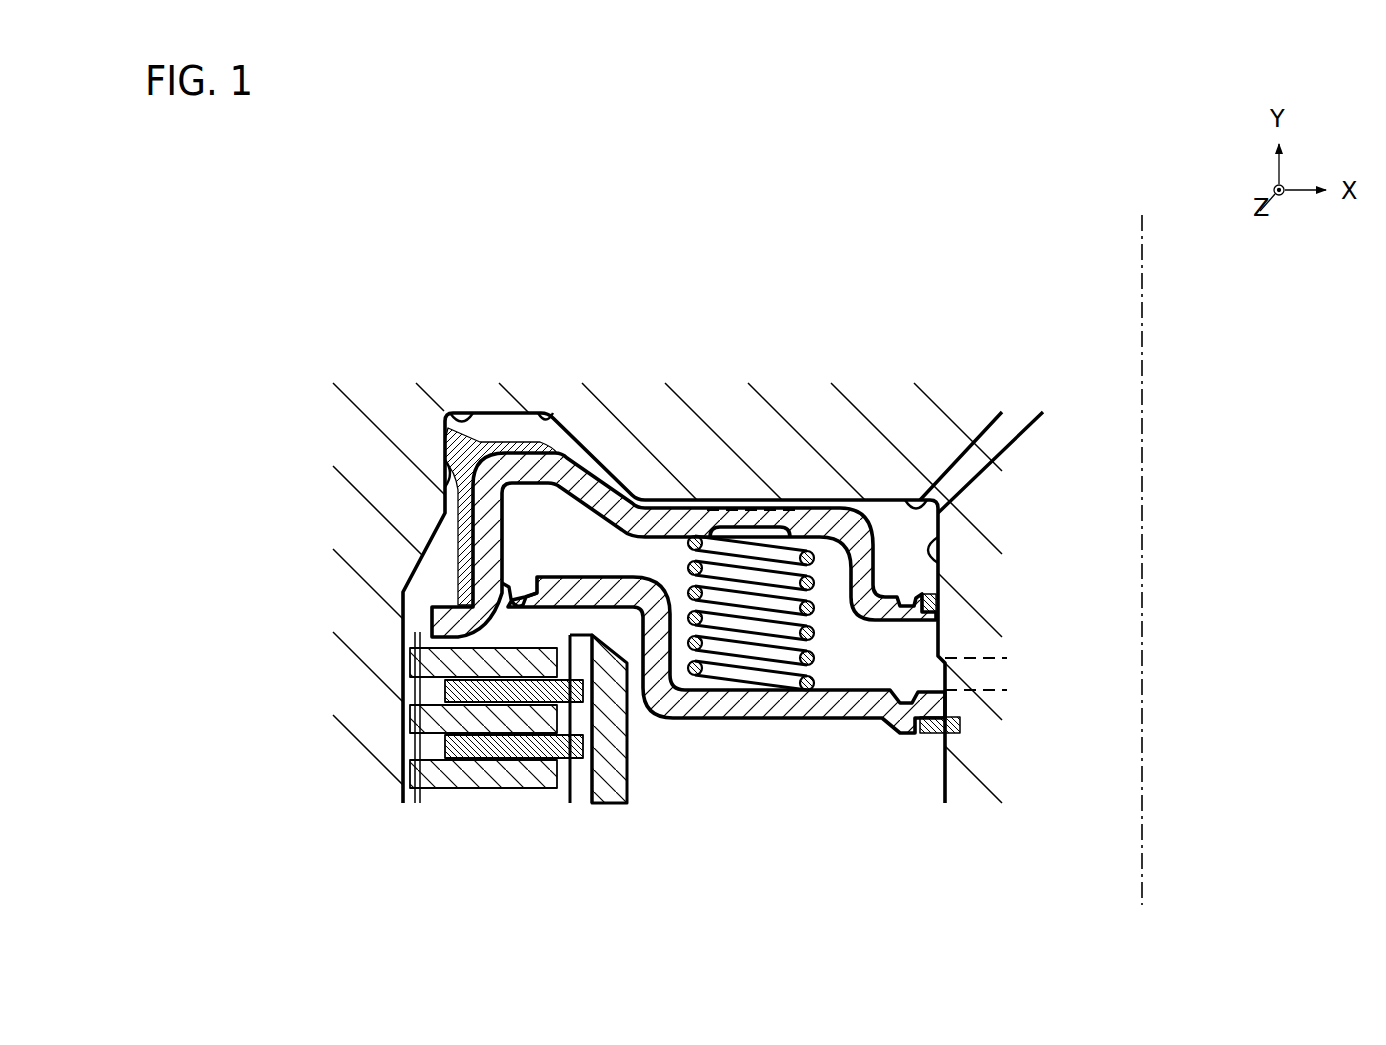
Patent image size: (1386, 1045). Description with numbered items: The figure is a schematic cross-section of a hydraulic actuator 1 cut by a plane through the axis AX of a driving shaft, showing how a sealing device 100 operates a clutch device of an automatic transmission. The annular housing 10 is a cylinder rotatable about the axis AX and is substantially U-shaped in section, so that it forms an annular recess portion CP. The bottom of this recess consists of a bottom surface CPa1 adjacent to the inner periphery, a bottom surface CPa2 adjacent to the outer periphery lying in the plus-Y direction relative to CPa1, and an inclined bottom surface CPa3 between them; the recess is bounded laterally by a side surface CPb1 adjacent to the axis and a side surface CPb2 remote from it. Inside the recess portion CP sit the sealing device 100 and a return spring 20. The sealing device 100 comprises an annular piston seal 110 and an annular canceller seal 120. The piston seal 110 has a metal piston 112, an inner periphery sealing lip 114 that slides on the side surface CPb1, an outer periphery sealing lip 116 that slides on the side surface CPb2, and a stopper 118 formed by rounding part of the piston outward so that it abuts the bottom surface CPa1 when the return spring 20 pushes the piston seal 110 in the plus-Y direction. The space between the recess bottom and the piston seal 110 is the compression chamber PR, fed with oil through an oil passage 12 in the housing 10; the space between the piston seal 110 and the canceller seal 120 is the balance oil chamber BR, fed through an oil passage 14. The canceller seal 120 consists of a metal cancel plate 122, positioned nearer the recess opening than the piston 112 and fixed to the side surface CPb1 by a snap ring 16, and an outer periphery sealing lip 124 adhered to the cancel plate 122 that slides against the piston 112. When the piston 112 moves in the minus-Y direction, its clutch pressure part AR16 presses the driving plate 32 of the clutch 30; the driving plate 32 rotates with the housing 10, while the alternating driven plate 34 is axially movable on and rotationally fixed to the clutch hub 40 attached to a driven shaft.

The hydraulic actuator 1 is at (250, 160).
The housing 10 is at (378, 772).
The oil passage 12 is at (1015, 410).
The oil passage 14 is at (992, 679).
The snap ring 16 is at (937, 734).
The return spring 20 is at (690, 688).
The clutch 30 is at (585, 866).
The driving plate 32 is at (430, 668).
The driven plate 34 is at (562, 678).
The clutch hub 40 is at (612, 773).
The sealing device 100 is at (710, 222).
The piston seal 110 is at (932, 270).
The piston 112 is at (639, 523).
The inner periphery sealing lip 114 is at (918, 588).
The outer periphery sealing lip 116 is at (493, 413).
The stopper 118 is at (725, 505).
The canceller seal 120 is at (366, 271).
The cancel plate 122 is at (627, 597).
The outer periphery sealing lip 124 is at (520, 588).
The clutch pressure part AR16 is at (417, 645).
The axis AX is at (1142, 470).
The balance oil chamber BR is at (833, 655).
The recess portion CP is at (750, 778).
The bottom surface adjacent to the inner periphery CPa1 is at (930, 505).
The bottom surface adjacent to the outer periphery CPa2 is at (456, 415).
The inclined bottom surface CPa3 is at (539, 415).
The side surface adjacent to the axis CPb1 is at (940, 563).
The side surface remote from the axis CPb2 is at (448, 468).
The compression chamber PR is at (889, 570).